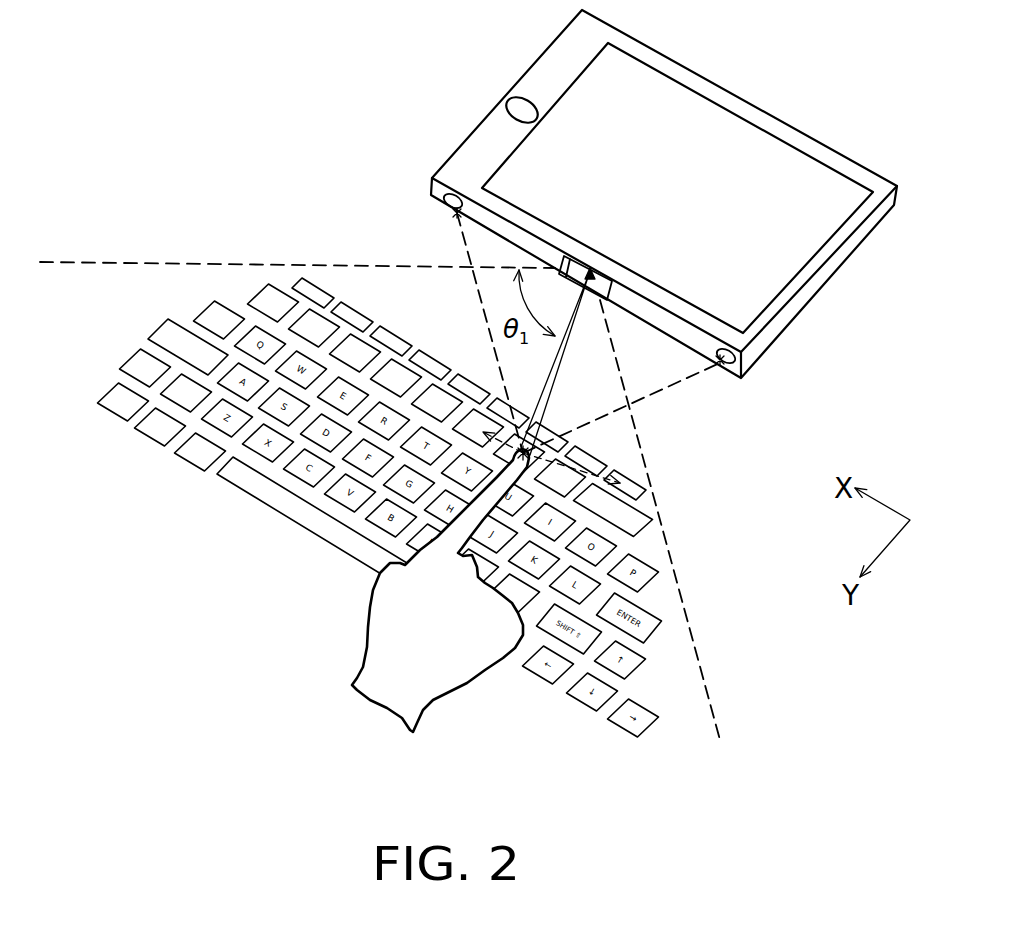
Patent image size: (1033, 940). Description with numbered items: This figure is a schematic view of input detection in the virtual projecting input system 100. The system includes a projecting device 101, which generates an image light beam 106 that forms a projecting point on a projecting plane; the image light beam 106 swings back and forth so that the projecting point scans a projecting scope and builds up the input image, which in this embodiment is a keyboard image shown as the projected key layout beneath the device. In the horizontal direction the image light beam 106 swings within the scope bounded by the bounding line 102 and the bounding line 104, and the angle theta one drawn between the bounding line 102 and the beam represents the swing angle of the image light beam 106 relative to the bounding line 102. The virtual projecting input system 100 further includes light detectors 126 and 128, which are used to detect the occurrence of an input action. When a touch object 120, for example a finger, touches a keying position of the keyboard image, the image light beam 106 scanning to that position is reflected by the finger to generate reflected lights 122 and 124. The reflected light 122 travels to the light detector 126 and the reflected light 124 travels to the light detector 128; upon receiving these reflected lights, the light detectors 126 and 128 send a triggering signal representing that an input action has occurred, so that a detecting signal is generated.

The virtual projecting input system 100 is at (728, 100).
The projecting device 101 is at (565, 263).
The bounding line 102 is at (163, 260).
The bounding line 104 is at (703, 632).
The image light beam 106 is at (541, 387).
The touch object 120 is at (387, 640).
The reflected light 122 is at (657, 390).
The reflected light 124 is at (483, 313).
The light detector 126 is at (743, 360).
The light detector 128 is at (440, 196).